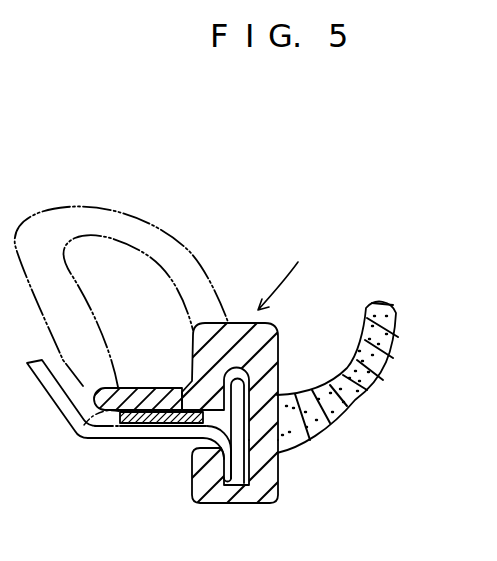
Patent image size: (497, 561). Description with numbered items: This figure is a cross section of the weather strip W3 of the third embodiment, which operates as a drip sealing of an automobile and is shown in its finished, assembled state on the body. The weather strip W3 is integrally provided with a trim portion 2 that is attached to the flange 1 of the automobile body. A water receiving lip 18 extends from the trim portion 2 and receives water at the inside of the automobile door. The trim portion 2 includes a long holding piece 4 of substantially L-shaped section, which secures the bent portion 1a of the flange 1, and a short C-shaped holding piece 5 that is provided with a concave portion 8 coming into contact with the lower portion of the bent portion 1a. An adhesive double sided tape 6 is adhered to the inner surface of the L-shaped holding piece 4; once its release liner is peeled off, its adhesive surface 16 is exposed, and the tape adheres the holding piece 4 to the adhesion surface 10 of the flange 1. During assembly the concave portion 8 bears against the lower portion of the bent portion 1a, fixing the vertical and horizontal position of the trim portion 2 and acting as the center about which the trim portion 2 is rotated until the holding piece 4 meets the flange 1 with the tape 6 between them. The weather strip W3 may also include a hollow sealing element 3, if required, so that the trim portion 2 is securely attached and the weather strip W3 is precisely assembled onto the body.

The flange 1 is at (110, 438).
The bent portion 1a is at (250, 452).
The trim portion 2 is at (250, 326).
The hollow sealing element 3 is at (127, 212).
The L-shaped holding piece 4 is at (150, 390).
The C-shaped holding piece 5 is at (257, 497).
The adhesive double sided tape 6 is at (143, 426).
The concave portion 8 is at (229, 485).
The adhesion surface 10 is at (84, 431).
The adhesive surface 16 is at (165, 427).
The water receiving lip 18 is at (367, 383).
The weather strip W3 is at (292, 271).